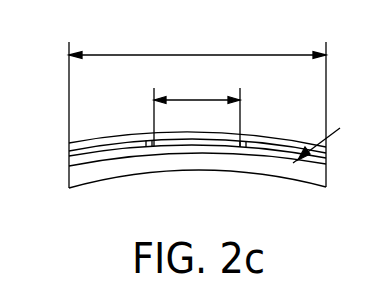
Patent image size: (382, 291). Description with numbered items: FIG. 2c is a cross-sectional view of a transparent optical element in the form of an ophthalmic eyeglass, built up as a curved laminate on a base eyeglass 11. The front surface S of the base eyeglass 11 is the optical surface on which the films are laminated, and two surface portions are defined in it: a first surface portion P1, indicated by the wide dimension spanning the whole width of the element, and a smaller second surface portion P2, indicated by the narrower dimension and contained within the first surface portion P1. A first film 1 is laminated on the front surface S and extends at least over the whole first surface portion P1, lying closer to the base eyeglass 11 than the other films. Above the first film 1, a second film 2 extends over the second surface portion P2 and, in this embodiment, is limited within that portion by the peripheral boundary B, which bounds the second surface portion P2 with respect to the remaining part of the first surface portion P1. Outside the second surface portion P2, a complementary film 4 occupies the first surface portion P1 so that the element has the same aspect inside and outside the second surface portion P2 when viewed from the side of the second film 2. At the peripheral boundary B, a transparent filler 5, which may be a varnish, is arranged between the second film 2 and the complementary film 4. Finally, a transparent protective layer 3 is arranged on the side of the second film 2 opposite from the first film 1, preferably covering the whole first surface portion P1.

The first film 1 is at (73, 167).
The second film 2 is at (170, 143).
The transparent protective layer 3 is at (98, 145).
The complementary film 4 is at (88, 155).
The transparent filler 5 is at (150, 149).
The base eyeglass 11 is at (278, 170).
The peripheral boundary B is at (234, 148).
The front surface S is at (325, 135).
The first surface portion P1 is at (197, 43).
The second surface portion P2 is at (197, 110).